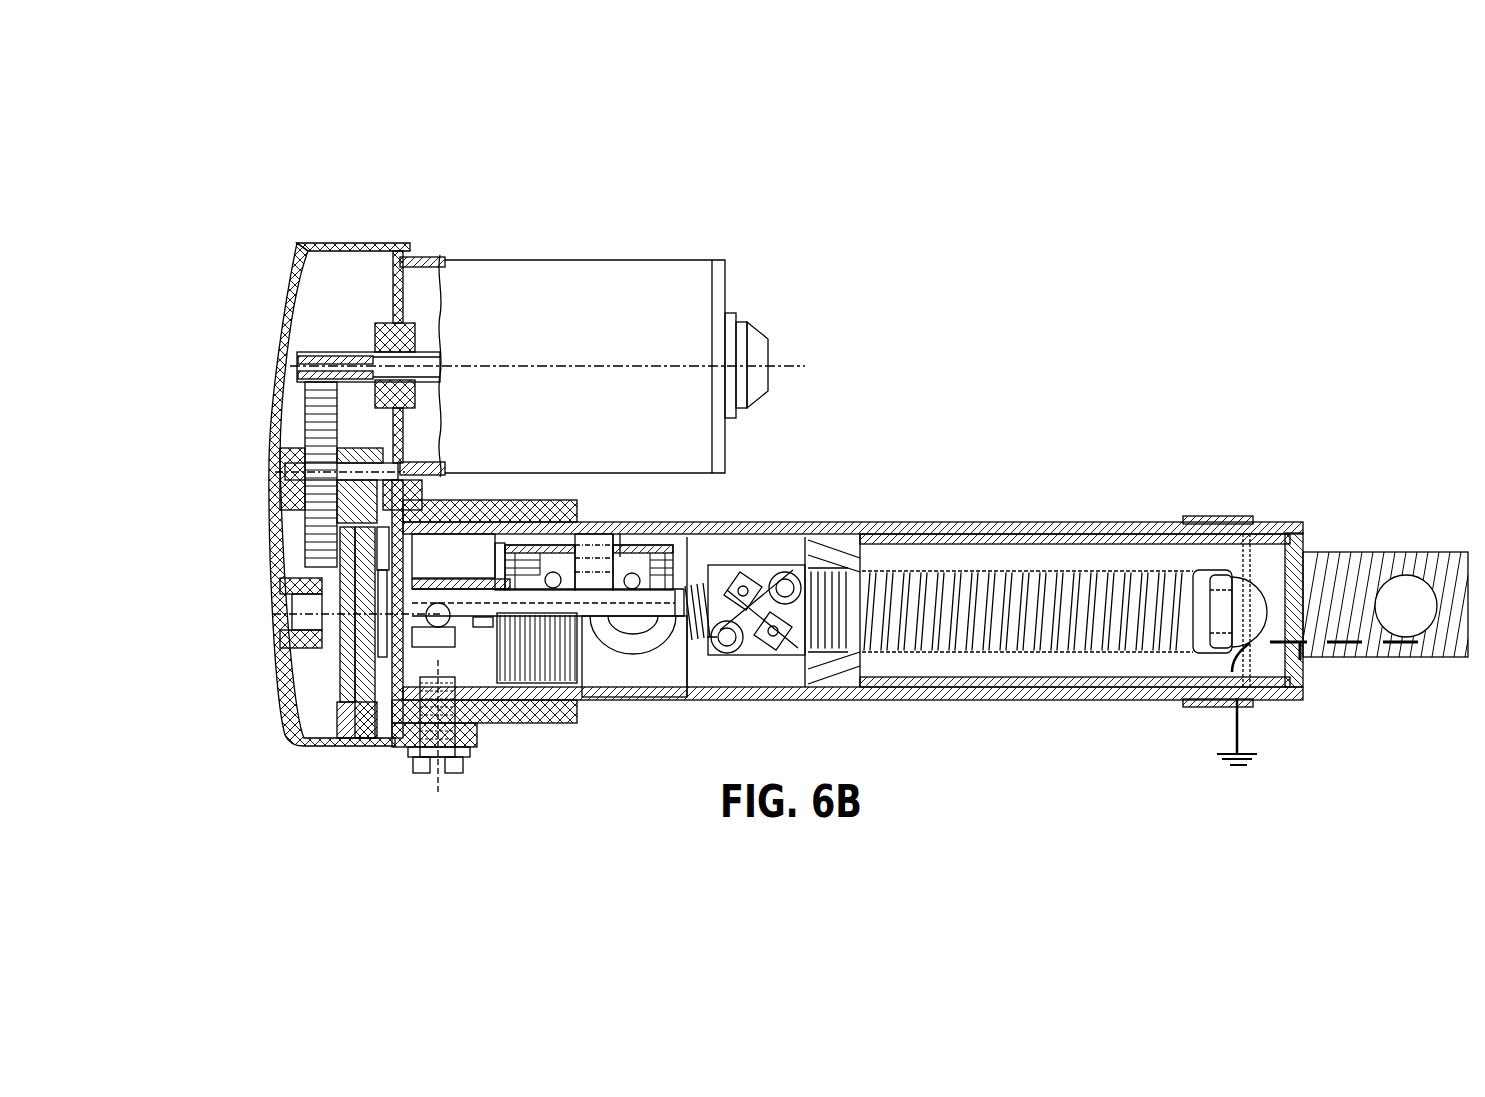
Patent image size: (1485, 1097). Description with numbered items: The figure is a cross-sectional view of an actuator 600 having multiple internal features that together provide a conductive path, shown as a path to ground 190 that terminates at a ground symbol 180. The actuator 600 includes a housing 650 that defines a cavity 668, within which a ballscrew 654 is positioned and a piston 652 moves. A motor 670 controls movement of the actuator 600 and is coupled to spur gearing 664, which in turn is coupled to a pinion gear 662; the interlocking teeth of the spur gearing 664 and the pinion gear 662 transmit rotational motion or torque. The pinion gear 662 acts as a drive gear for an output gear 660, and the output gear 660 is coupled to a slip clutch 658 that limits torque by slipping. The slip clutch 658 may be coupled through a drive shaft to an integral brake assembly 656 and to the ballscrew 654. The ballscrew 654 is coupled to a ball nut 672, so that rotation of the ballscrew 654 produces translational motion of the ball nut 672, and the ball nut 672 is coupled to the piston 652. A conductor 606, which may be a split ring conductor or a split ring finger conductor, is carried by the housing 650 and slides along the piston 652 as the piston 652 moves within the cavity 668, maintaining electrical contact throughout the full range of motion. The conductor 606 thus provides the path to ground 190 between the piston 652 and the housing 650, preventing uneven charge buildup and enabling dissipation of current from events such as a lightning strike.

The actuator 600 is at (1276, 64).
The conductor 606 is at (1230, 522).
The housing 650 is at (1030, 527).
The piston 652 is at (1287, 540).
The ballscrew 654 is at (1003, 608).
The integral brake assembly 656 is at (530, 643).
The slip clutch 658 is at (358, 713).
The output gear 660 is at (335, 682).
The pinion gear 662 is at (320, 428).
The spur gearing 664 is at (340, 362).
The cavity 668 is at (735, 550).
The motor 670 is at (573, 258).
The ball nut 672 is at (757, 612).
The ground symbol 180 is at (1235, 729).
The path to ground 190 is at (1300, 660).